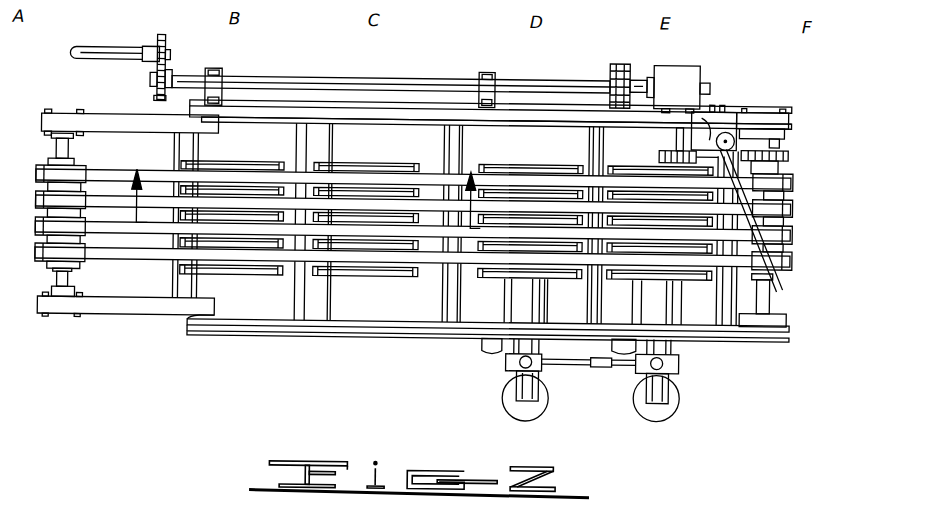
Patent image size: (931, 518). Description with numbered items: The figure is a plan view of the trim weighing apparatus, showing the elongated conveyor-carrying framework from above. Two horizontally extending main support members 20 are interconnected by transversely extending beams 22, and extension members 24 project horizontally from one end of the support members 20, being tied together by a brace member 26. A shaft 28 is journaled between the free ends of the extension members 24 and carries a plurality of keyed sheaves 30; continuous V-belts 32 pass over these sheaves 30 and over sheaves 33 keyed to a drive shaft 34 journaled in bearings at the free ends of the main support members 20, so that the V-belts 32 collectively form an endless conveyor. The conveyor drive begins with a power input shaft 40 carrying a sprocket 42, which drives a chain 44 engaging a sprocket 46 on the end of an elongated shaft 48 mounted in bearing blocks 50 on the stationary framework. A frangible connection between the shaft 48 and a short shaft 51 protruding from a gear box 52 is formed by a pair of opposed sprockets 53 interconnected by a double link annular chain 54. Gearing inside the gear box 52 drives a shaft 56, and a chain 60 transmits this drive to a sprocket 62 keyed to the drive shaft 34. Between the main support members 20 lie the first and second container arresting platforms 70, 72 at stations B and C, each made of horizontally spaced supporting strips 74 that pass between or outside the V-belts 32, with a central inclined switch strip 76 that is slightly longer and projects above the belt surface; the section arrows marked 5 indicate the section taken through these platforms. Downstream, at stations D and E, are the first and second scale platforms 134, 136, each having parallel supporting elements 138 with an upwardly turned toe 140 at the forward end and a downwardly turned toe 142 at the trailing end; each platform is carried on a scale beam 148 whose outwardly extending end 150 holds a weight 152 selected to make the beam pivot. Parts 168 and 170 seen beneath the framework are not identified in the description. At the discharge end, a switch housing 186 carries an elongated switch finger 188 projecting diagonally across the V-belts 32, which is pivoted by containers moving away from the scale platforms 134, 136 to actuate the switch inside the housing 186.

The main support members 20 is at (256, 107).
The transversely extending beams 22 is at (306, 139).
The extension members 24 is at (125, 114).
The brace member 26 is at (188, 290).
The shaft 28 is at (50, 151).
The V-belt supporting sheaves 30 is at (40, 188).
The V-belts 32 is at (435, 263).
The sheaves 33 is at (787, 171).
The drive shaft 34 is at (770, 142).
The power input shaft 40 is at (102, 46).
The sprocket 42 is at (154, 31).
The chain 44 is at (168, 72).
The sprocket 46 is at (160, 102).
The elongated shaft 48 is at (372, 80).
The bearing blocks 50 is at (214, 69).
The short shaft 51 is at (665, 70).
The gear box 52 is at (690, 87).
The opposed sprockets 53 is at (608, 76).
The double link annular chain 54 is at (614, 58).
The shaft 56 is at (714, 106).
The chain 60 is at (742, 150).
The sprocket 62 is at (789, 156).
The first container arresting platform 70 is at (238, 155).
The second container arresting platform 72 is at (396, 152).
The supporting strips 74 is at (256, 167).
The inclined switch strip 76 is at (182, 221).
The first scale platform 134 is at (522, 152).
The second scale platform 136 is at (628, 149).
The supporting elements 138 is at (544, 164).
The upwardly turned toe 140 is at (583, 277).
The downwardly turned toe 142 is at (483, 159).
The scale beam 148 is at (508, 316).
The outwardly extending end 150 is at (518, 386).
The weight 152 is at (528, 411).
The caster housing 168 is at (507, 361).
The caster housing 170 is at (681, 362).
The switch housing 186 is at (738, 120).
The switch finger 188 is at (783, 282).
The section arrows 5 is at (306, 186).